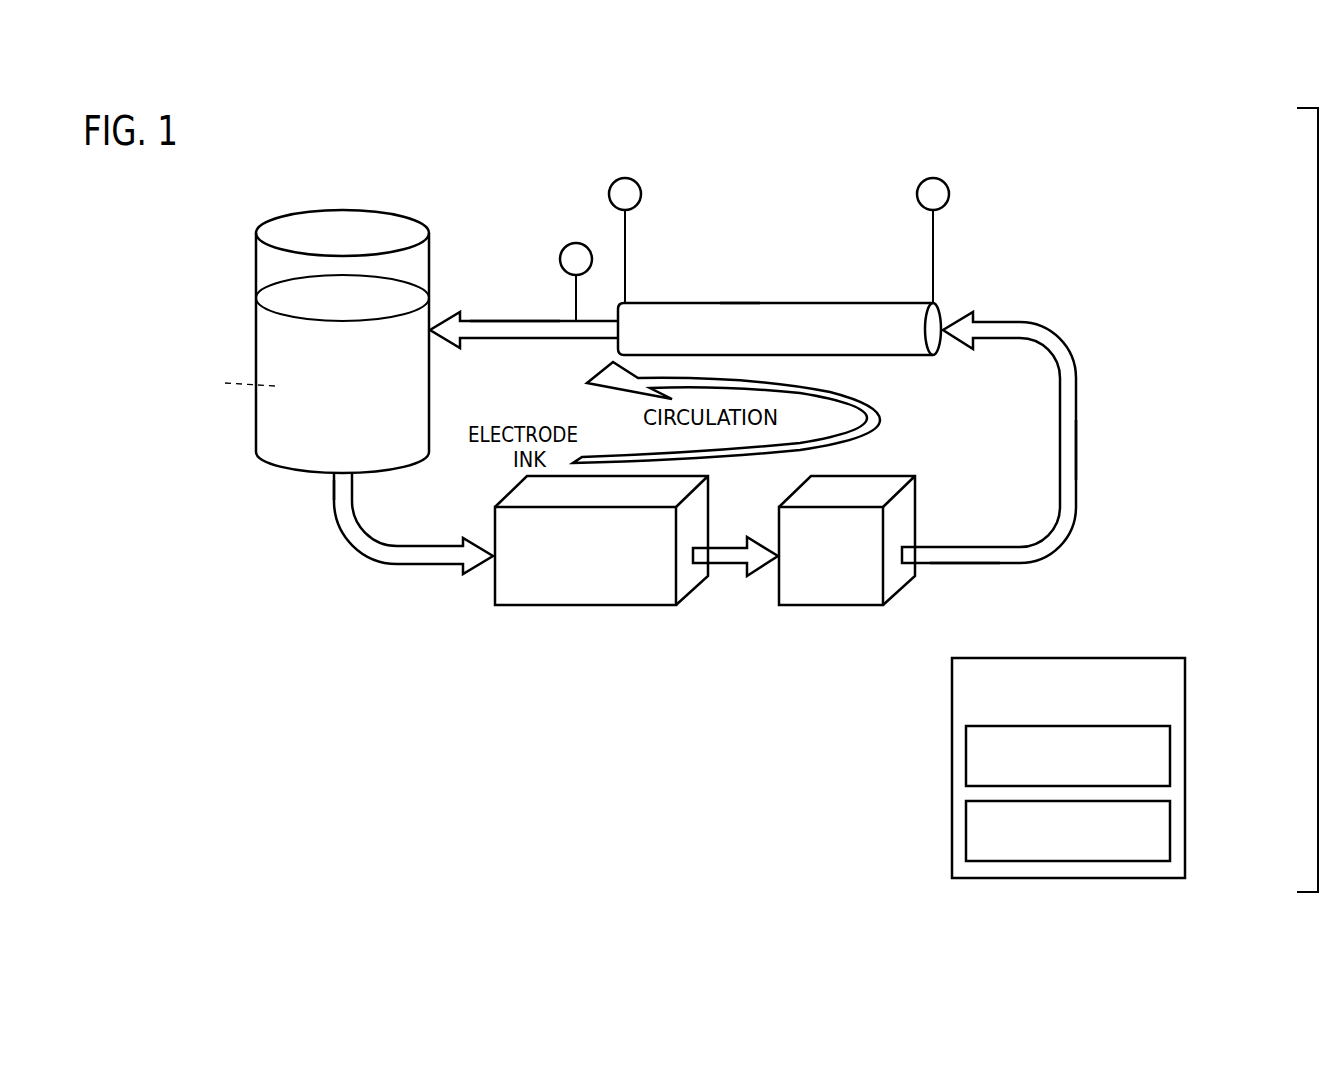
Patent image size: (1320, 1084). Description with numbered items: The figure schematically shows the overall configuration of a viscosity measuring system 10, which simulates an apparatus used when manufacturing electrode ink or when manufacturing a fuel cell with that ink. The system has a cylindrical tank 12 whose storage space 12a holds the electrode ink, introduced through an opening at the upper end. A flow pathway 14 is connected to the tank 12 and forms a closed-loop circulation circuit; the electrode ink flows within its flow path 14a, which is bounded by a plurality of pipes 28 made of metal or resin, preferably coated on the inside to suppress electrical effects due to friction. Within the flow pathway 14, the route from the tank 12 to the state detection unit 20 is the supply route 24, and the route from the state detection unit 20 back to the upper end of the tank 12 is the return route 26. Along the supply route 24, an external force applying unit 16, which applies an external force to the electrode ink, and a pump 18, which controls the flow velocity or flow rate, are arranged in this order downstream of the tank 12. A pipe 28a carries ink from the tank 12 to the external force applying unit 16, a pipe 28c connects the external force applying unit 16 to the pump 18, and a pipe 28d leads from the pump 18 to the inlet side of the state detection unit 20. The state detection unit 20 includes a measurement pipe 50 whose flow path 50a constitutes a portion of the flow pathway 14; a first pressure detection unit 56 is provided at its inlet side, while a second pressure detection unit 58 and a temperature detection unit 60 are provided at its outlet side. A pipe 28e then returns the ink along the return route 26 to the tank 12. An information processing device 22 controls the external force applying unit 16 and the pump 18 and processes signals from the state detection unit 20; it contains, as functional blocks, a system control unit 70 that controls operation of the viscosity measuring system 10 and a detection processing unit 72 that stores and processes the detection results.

The viscosity measuring system 10 is at (423, 149).
The tank 12 is at (267, 334).
The storage space 12a is at (272, 275).
The flow pathway 14 is at (359, 544).
The flow path 14a is at (345, 505).
The external force applying unit 16 is at (567, 609).
The pump 18 is at (823, 609).
The state detection unit 20 is at (755, 239).
The information processing device 22 is at (1101, 768).
The supply route 24 is at (1028, 462).
The return route 26 is at (524, 325).
The pipes 28 is at (1082, 503).
The pipe 28a is at (363, 550).
The pipe 28c is at (729, 565).
The pipe 28d is at (958, 565).
The pipe 28e is at (500, 320).
The measurement pipe 50 is at (779, 305).
The flow path 50a is at (734, 320).
The first pressure detection unit 56 is at (933, 178).
The second pressure detection unit 58 is at (625, 178).
The temperature detection unit 60 is at (576, 243).
The system control unit 70 is at (1170, 757).
The detection processing unit 72 is at (1170, 828).